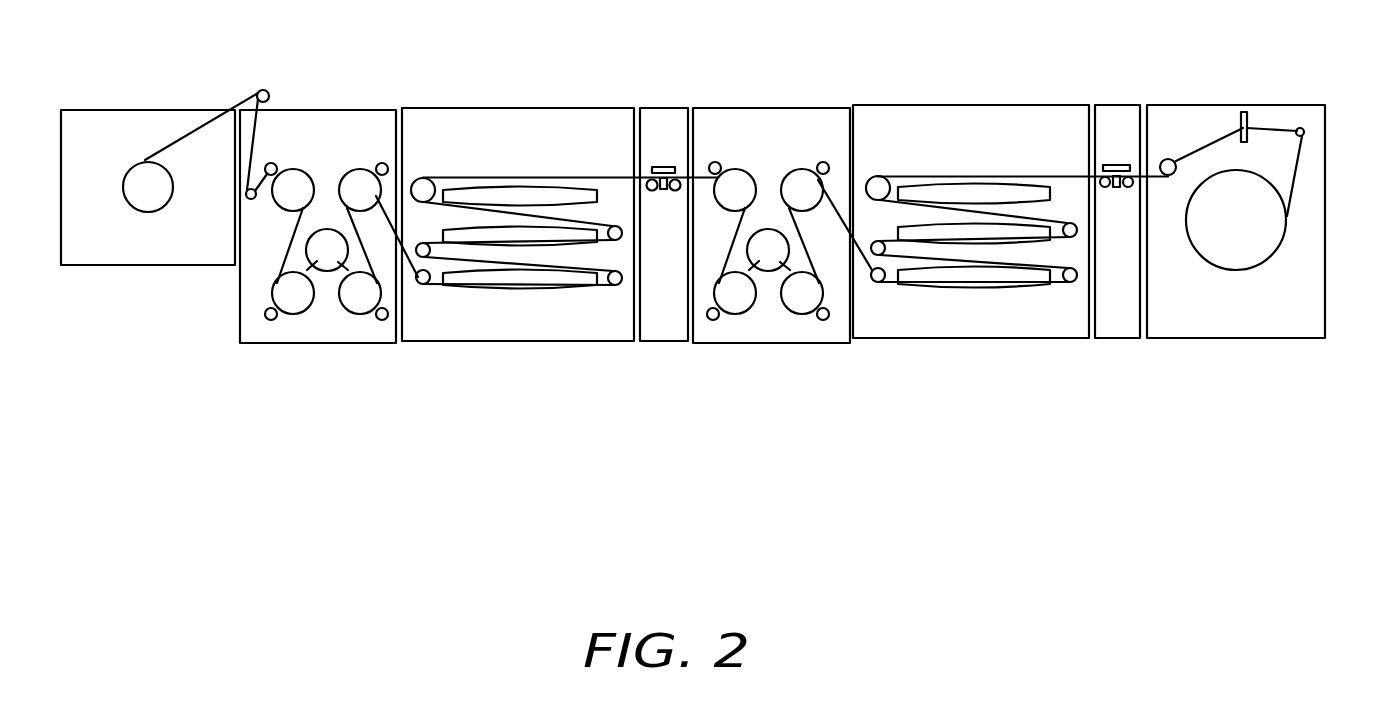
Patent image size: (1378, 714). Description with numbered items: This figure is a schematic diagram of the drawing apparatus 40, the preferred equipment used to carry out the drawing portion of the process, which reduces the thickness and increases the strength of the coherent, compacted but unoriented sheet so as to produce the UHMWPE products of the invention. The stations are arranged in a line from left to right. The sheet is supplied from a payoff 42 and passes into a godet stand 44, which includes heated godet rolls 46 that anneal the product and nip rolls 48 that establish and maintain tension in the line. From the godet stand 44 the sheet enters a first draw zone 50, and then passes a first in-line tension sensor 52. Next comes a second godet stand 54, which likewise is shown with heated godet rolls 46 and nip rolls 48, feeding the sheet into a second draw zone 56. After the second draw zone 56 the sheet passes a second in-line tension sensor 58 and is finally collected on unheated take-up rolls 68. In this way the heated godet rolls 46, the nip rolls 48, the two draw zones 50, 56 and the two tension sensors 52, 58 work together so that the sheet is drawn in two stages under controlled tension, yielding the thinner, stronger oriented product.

The drawing apparatus 40 is at (622, 507).
The payoff 42 is at (108, 110).
The godet stand 44 is at (378, 117).
The heated godet rolls 46 is at (359, 190).
The nip rolls 48 is at (381, 163).
The first draw zone 50 is at (535, 118).
The first in-line tension sensor 52 is at (663, 123).
The second godet stand 54 is at (832, 115).
The second draw zone 56 is at (960, 117).
The second in-line tension sensor 58 is at (1118, 120).
The unheated take-up rolls 68 is at (1207, 118).